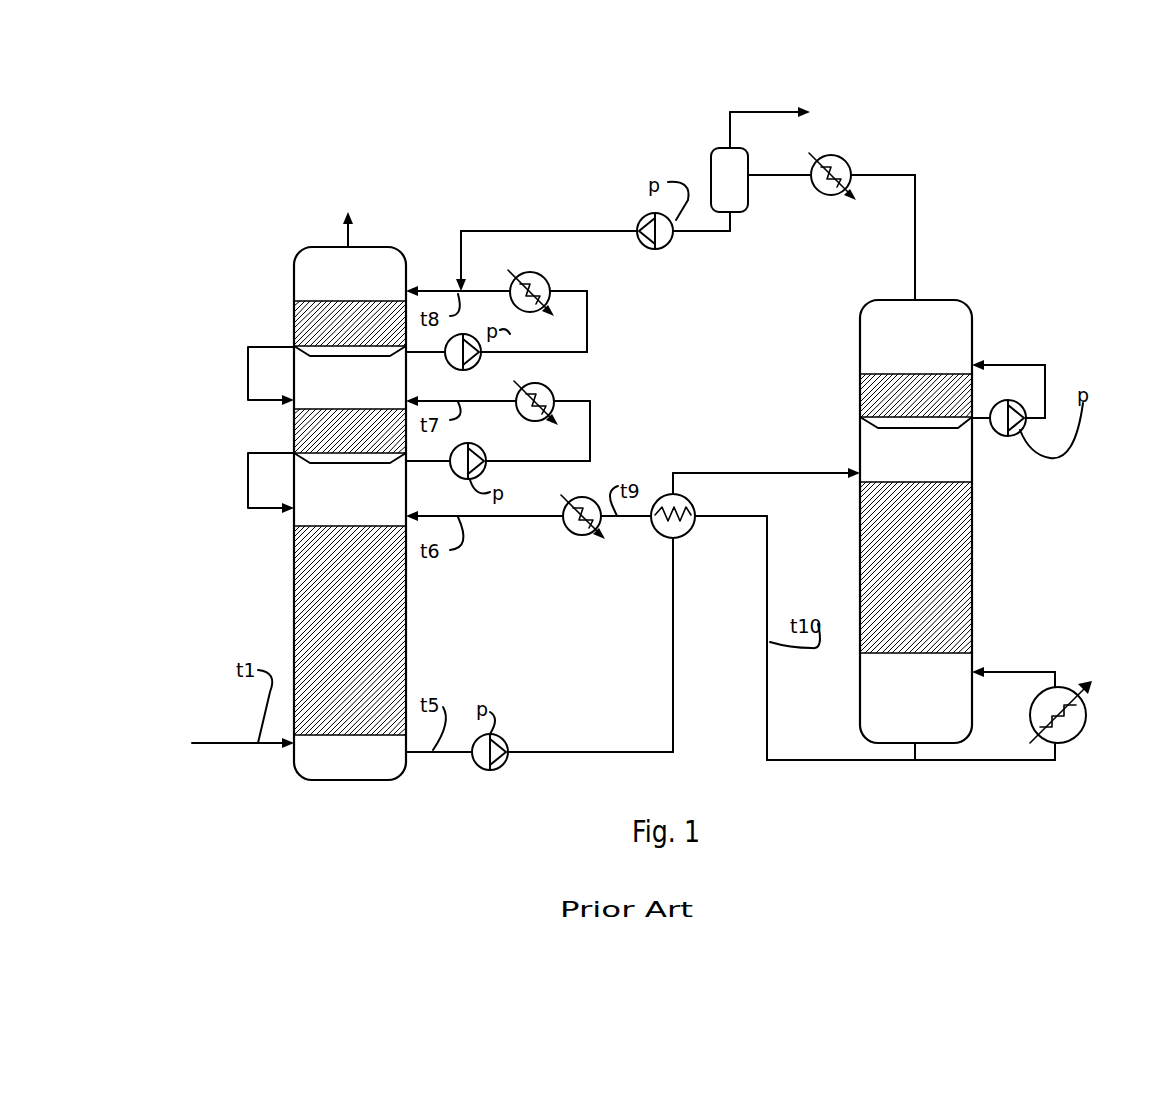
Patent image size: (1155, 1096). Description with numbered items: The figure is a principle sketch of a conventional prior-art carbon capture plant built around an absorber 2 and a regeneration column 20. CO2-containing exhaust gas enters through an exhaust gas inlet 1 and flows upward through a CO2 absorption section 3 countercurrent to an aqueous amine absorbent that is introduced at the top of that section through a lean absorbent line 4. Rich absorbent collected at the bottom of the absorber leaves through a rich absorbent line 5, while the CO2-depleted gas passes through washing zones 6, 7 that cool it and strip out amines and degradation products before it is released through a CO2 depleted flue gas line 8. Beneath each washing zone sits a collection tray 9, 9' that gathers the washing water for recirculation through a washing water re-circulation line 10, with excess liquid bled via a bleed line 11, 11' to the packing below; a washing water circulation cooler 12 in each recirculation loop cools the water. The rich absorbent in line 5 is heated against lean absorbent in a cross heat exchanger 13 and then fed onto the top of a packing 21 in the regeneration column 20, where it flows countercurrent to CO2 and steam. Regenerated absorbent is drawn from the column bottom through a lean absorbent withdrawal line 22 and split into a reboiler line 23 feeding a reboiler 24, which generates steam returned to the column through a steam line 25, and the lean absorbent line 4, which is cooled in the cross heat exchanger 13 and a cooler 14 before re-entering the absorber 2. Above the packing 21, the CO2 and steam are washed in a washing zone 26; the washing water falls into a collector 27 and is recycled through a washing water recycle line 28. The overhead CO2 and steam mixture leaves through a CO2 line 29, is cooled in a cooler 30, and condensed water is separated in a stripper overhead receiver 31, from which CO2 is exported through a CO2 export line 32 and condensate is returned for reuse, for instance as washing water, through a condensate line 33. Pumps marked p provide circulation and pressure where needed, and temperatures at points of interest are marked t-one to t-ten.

The exhaust gas inlet 1 is at (228, 743).
The absorber 2 is at (247, 617).
The CO2 absorption section 3 is at (350, 630).
The lean absorbent line 4 is at (508, 516).
The rich absorbent line 5 is at (585, 752).
The washing zone 6 is at (350, 436).
The washing zone 7 is at (350, 328).
The CO2 depleted flue gas line 8 is at (345, 231).
The collection tray 9 is at (272, 470).
The collection tray 9' is at (272, 357).
The washing water re-circulation line 10 is at (592, 350).
The bleed line 11 is at (215, 491).
The bleed line 11' is at (205, 368).
The washing water circulation cooler 12 is at (588, 258).
The cross heat exchanger 13 is at (665, 531).
The cooler 14 is at (580, 536).
The regeneration column 20 is at (1035, 524).
The packing 21 is at (916, 567).
The lean absorbent withdrawal line 22 is at (910, 750).
The reboiler line 23 is at (1035, 762).
The reboiler 24 is at (1062, 692).
The steam line 25 is at (1003, 672).
The washing zone 26 is at (916, 395).
The collector 27 is at (880, 427).
The washing water recycle line 28 is at (1047, 367).
The CO2 line 29 is at (972, 240).
The cooler 30 is at (855, 163).
The stripper overhead receiver 31 is at (723, 172).
The CO2 export line 32 is at (780, 115).
The condensate line 33 is at (567, 228).